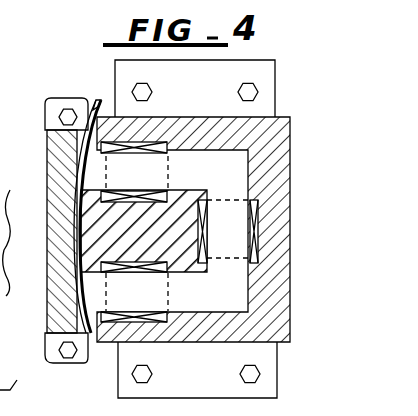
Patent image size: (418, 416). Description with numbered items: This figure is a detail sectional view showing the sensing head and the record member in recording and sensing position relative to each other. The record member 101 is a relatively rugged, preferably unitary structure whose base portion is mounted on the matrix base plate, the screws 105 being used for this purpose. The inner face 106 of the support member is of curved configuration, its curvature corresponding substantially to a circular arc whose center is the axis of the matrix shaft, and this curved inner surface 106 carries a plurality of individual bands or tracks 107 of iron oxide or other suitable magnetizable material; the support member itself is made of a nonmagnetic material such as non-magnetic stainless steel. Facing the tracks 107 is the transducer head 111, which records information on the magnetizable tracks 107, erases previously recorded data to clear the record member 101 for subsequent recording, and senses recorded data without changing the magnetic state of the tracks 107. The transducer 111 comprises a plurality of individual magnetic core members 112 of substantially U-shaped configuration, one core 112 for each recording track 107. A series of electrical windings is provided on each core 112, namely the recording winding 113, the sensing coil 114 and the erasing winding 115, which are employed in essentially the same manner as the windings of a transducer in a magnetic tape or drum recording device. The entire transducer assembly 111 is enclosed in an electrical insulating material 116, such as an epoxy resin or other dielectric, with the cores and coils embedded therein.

The record member 101 is at (44, 226).
The screws 105 is at (67, 115).
The inner face 106 is at (94, 110).
The recording tracks 107 is at (80, 173).
The transducer head 111 is at (206, 114).
The magnetic core member 112 is at (283, 148).
The recording winding 113 is at (153, 141).
The sensing coil 114 is at (283, 222).
The erasing winding 115 is at (164, 325).
The electrical insulating material 116 is at (247, 338).